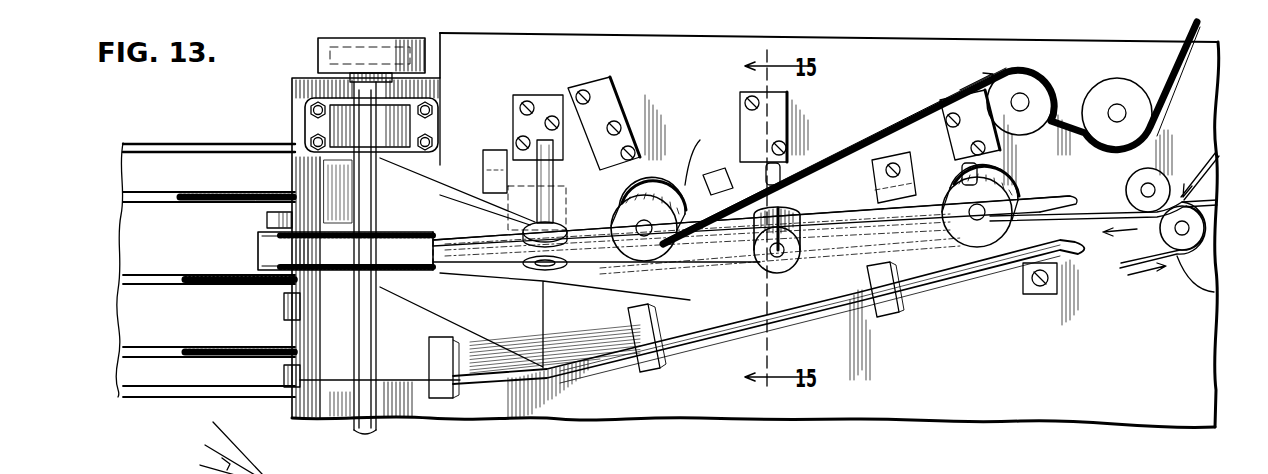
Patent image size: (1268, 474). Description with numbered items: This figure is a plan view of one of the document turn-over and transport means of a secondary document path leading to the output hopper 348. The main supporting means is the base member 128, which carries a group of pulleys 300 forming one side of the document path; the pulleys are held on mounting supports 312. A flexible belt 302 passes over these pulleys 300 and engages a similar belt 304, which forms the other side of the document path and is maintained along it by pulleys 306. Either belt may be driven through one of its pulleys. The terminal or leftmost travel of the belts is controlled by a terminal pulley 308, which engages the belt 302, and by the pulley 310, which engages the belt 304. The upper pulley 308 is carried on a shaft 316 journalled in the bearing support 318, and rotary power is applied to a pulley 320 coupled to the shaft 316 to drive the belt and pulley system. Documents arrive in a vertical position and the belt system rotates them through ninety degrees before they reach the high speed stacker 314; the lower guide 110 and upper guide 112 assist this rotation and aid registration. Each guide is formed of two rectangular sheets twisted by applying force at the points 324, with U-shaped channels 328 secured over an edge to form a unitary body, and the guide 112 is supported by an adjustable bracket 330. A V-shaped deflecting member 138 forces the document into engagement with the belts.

The lower document guide 110 is at (699, 150).
The upper document guide 112 is at (720, 340).
The base member 128 is at (970, 395).
The V-shaped deflecting member 138 is at (1216, 211).
The pulleys 300 is at (665, 195).
The flexible belt 302 is at (462, 248).
The belt 304 is at (260, 256).
The pulleys 306 is at (1205, 240).
The terminal pulley 308 is at (330, 270).
The pulley 310 is at (268, 220).
The mounting supports 312 is at (520, 122).
The high speed stacker 314 is at (122, 350).
The shaft 316 is at (352, 405).
The bearing support 318 is at (335, 128).
The pulley 320 is at (380, 38).
The points 324 is at (540, 340).
The U-shaped channels 328 is at (440, 398).
The bracket 330 is at (1040, 297).
The output hopper 348 is at (152, 157).